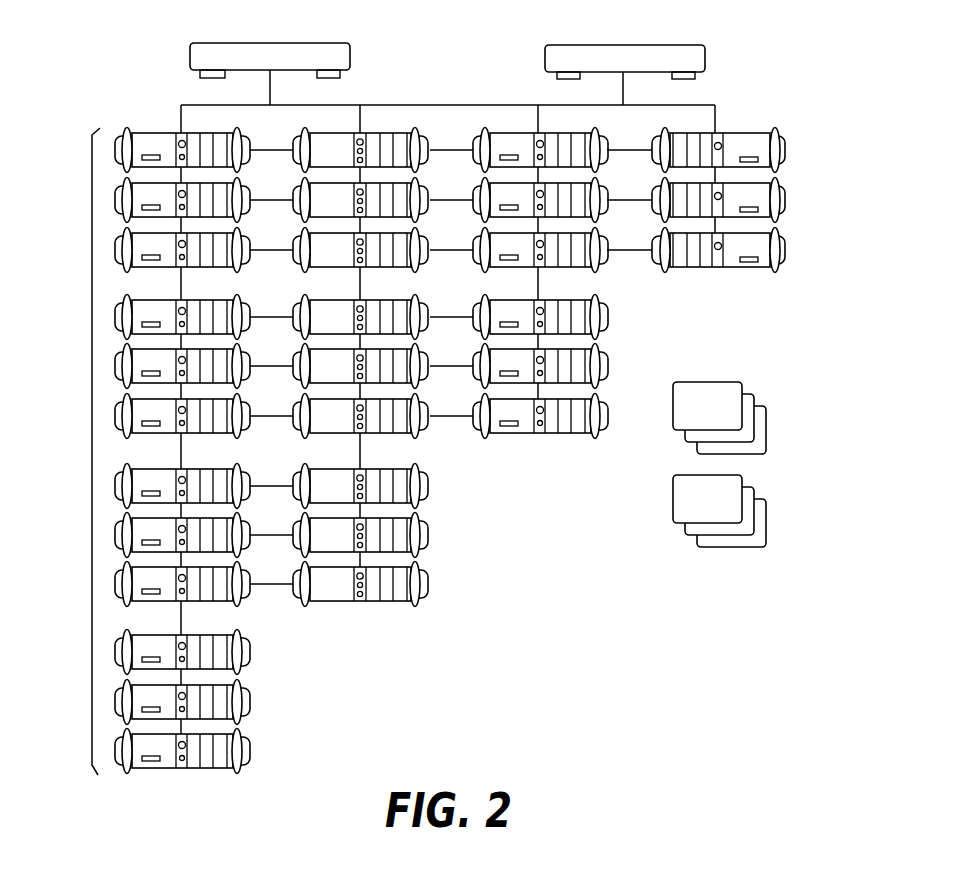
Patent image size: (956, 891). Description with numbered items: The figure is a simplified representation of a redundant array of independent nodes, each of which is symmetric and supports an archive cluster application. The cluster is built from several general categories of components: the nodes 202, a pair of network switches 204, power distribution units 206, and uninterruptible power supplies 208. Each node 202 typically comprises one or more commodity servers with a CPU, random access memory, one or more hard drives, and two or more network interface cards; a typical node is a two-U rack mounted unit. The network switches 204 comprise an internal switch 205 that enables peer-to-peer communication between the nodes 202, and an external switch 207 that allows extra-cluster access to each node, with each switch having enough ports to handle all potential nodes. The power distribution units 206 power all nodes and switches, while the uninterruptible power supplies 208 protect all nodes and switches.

The nodes 202 is at (90, 479).
The network switches 204 is at (756, 100).
The internal switch 205 is at (190, 57).
The power distribution units 206 is at (707, 382).
The external switch 207 is at (705, 60).
The uninterruptible power supplies 208 is at (717, 547).